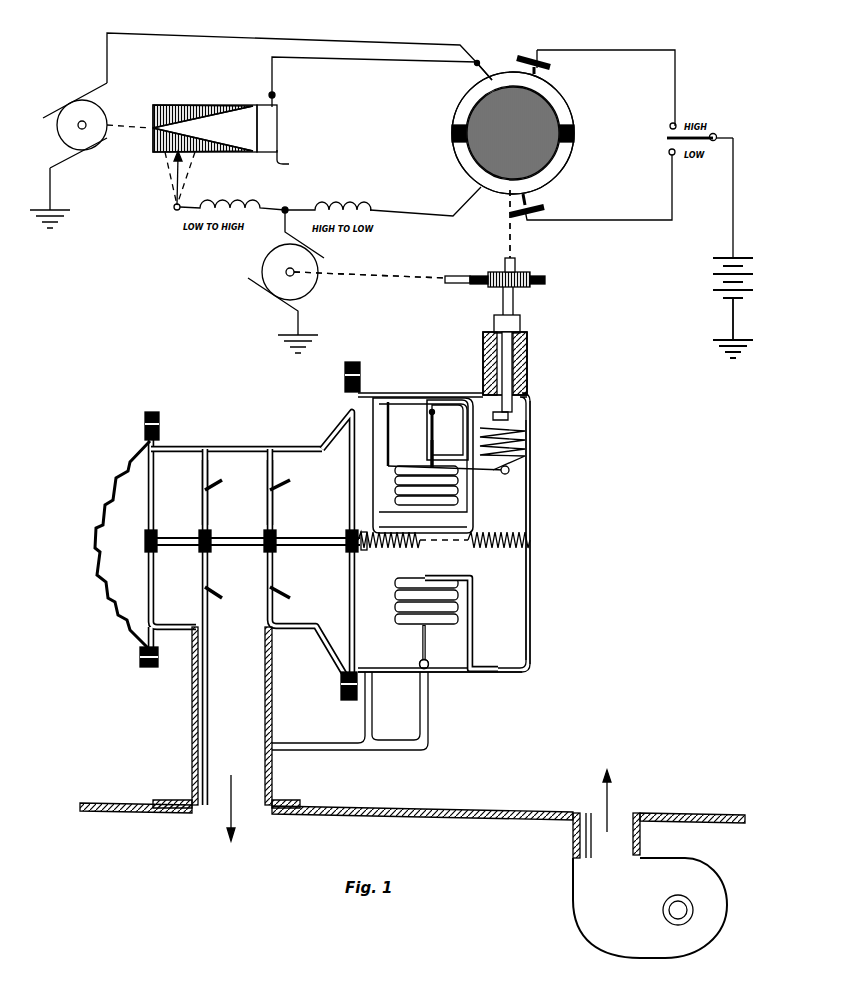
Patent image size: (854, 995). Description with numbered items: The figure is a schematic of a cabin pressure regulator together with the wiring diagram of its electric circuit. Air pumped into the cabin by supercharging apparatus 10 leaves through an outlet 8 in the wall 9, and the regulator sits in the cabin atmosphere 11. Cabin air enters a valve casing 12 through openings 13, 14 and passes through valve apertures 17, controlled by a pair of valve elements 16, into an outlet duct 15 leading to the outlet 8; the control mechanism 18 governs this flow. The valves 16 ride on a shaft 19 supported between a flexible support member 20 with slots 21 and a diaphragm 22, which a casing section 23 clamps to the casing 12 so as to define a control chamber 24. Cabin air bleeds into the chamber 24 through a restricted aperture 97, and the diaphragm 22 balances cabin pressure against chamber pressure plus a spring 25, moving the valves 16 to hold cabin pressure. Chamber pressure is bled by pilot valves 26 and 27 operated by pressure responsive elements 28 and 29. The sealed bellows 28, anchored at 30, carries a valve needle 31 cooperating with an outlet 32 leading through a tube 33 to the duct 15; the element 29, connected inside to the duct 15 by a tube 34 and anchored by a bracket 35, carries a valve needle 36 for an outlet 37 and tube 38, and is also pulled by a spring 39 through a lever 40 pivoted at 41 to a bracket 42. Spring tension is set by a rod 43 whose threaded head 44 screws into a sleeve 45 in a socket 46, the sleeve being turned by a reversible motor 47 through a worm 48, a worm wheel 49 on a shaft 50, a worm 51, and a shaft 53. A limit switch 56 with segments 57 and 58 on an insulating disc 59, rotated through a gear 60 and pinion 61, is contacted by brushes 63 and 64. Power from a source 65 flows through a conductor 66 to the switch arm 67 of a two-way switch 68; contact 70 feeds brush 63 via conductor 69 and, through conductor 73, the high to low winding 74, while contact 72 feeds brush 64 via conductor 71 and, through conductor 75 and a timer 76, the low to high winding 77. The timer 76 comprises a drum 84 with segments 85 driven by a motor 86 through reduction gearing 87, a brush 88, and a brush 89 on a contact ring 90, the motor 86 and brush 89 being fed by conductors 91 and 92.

The outlet 8 is at (213, 815).
The wall 9 is at (382, 807).
The supercharging apparatus 10 is at (590, 922).
The cabin atmosphere 11 is at (680, 762).
The valve casing 12 is at (262, 449).
The opening 13 is at (173, 448).
The opening 14 is at (340, 435).
The outlet duct 15 is at (192, 700).
The valve element 16 is at (267, 512).
The valve aperture 17 is at (203, 489).
The control mechanism 18 is at (536, 577).
The shaft 19 is at (238, 548).
The flexible support member 20 is at (156, 572).
The slot 21 is at (157, 592).
The diaphragm 22 is at (348, 590).
The casing section 23 is at (516, 674).
The control chamber 24 is at (512, 638).
The spring 25 is at (472, 560).
The pilot valve 26 is at (415, 661).
The pilot valve 27 is at (428, 412).
The pressure responsive element 28 is at (410, 580).
The pressure responsive element 29 is at (460, 496).
The anchor 30 is at (474, 608).
The valve needle 31 is at (430, 641).
The outlet 32 is at (430, 664).
The tube 33 is at (431, 715).
The tube 34 is at (374, 711).
The bracket 35 is at (360, 386).
The valve needle 36 is at (434, 452).
The outlet 37 is at (435, 418).
The tube 38 is at (475, 527).
The spring 39 is at (528, 436).
The lever 40 is at (500, 474).
The pivot 41 is at (390, 462).
The bracket 42 is at (397, 402).
The rod 43 is at (495, 417).
The threaded head 44 is at (528, 365).
The sleeve 45 is at (522, 322).
The socket 46 is at (528, 347).
The reversible motor 47 is at (318, 290).
The worm 48 is at (398, 279).
The worm wheel 49 is at (369, 265).
The shaft 50 is at (459, 275).
The worm 51 is at (527, 272).
The shaft 53 is at (504, 299).
The limit switch 56 is at (450, 121).
The contact segment 57 is at (468, 165).
The contact segment 58 is at (462, 95).
The disc 59 is at (466, 147).
The gear 60 is at (515, 243).
The pinion 61 is at (544, 226).
The brush 63 is at (540, 196).
The brush 64 is at (546, 70).
The source of power 65 is at (746, 264).
The conductor 66 is at (736, 192).
The switch arm 67 is at (718, 135).
The two-way switch 68 is at (685, 113).
The conductor 69 is at (649, 221).
The switch contact 70 is at (669, 153).
The conductor 71 is at (662, 50).
The switch contact 72 is at (670, 126).
The conductor 73 is at (410, 213).
The high to low winding 74 is at (346, 200).
The conductor 75 is at (480, 66).
The timer 76 is at (281, 127).
The low to high winding 77 is at (228, 202).
The drum 84 is at (170, 105).
The contact segment 85 is at (213, 118).
The motor 86 is at (100, 105).
The reduction gearing 87 is at (133, 131).
The brush 88 is at (172, 180).
The brush 89 is at (276, 95).
The contact ring 90 is at (293, 162).
The conductor 91 is at (213, 33).
The conductor 92 is at (362, 63).
The restricted aperture 97 is at (534, 505).